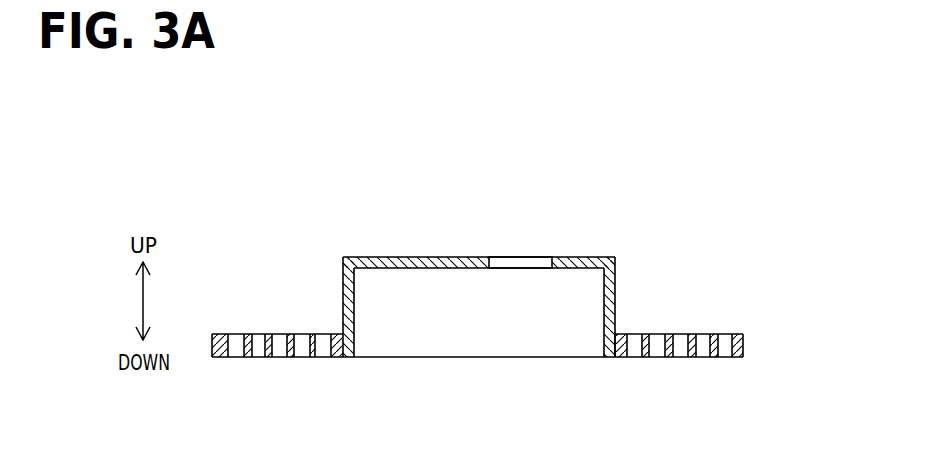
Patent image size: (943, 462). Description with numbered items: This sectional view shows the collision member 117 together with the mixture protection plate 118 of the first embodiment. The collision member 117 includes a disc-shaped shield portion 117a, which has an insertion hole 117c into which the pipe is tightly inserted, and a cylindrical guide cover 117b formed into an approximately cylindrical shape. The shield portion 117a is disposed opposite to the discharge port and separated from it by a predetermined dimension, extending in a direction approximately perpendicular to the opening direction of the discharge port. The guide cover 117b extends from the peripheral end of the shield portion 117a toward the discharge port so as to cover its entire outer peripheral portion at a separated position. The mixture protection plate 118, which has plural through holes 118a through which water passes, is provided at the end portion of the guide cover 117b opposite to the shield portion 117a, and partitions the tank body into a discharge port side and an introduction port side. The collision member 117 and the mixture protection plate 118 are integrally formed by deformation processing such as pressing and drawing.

The collision member 117 is at (514, 259).
The shield portion 117a is at (403, 257).
The guide cover 117b is at (645, 280).
The insertion hole 117c is at (523, 257).
The mixture protection plate 118 is at (525, 333).
The through holes 118a is at (678, 345).